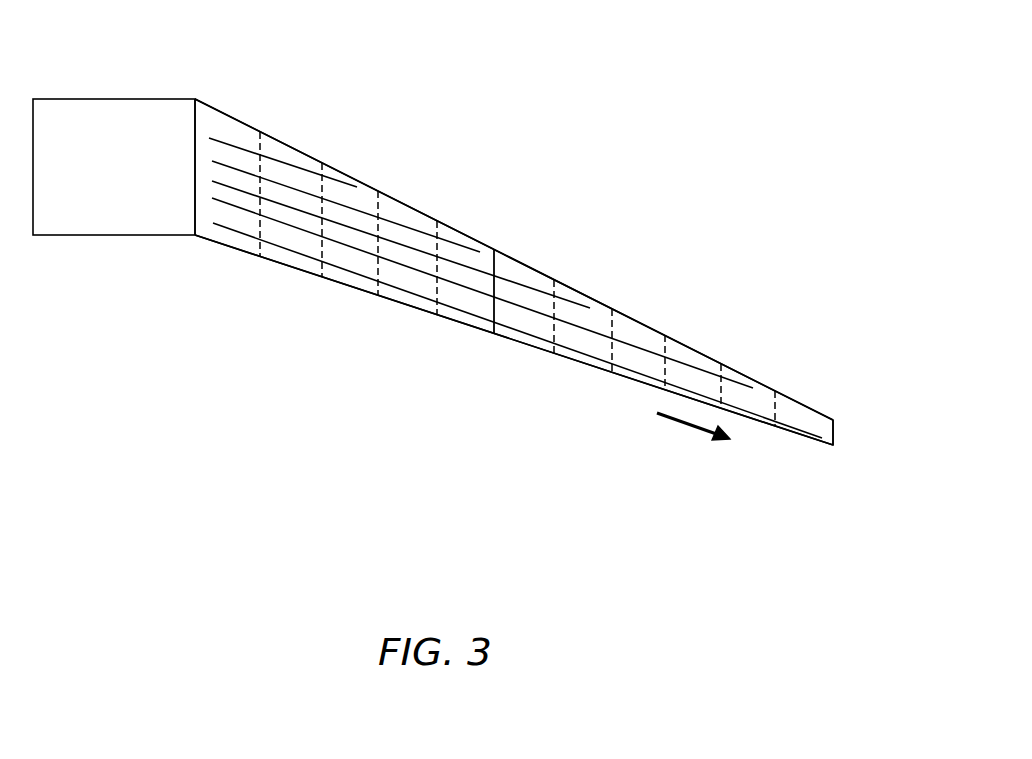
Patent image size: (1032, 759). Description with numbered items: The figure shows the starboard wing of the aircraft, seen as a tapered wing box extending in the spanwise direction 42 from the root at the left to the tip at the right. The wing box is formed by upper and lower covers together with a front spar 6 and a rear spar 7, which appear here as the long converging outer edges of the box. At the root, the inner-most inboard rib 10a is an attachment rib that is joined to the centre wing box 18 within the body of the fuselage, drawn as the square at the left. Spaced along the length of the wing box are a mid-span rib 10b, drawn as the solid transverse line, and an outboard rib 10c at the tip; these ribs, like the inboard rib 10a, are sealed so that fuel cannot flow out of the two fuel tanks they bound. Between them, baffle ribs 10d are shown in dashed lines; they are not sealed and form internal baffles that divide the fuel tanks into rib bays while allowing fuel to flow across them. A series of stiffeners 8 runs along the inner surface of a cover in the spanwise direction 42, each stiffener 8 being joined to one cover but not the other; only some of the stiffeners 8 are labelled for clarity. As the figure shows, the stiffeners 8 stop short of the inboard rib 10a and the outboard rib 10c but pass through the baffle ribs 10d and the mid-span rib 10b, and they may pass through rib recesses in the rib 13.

The front spar 6 is at (410, 202).
The rear spar 7 is at (395, 302).
The stiffener 8 is at (233, 143).
The inboard rib 10a is at (194, 161).
The mid-span rib 10b is at (497, 260).
The outboard rib 10c is at (836, 433).
The baffle ribs 10d is at (260, 173).
The rib 13 is at (612, 325).
The centre wing box 18 is at (153, 127).
The spanwise direction 42 is at (690, 427).